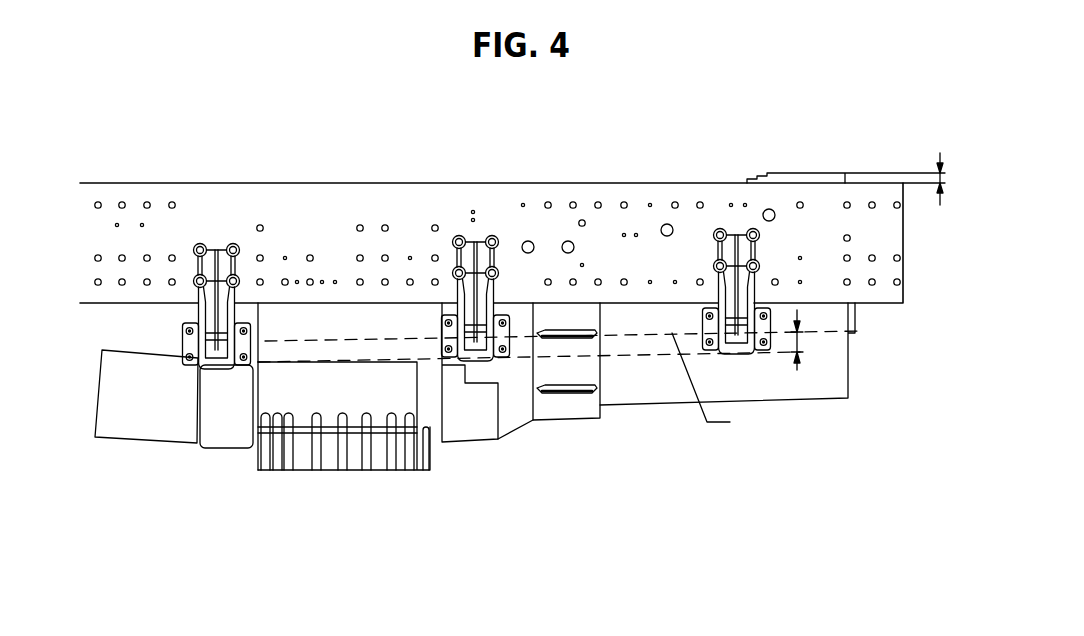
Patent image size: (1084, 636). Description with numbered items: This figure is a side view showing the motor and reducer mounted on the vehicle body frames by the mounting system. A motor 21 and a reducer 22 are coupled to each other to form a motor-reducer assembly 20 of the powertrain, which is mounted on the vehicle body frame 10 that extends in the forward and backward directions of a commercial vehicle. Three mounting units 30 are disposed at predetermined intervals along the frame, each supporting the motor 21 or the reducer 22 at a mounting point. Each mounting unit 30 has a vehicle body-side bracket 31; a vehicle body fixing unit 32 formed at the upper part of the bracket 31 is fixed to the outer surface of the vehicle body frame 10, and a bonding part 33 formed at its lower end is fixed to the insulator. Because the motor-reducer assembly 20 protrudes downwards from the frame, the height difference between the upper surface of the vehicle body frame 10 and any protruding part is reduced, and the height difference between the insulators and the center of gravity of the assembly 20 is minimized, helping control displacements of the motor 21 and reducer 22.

The vehicle body frame 10 is at (350, 183).
The motor-reducer assembly 20 is at (487, 516).
The motor 21 is at (622, 388).
The reducer 22 is at (405, 387).
The mounting unit 30 is at (226, 232).
The vehicle body-side bracket 31 is at (242, 248).
The vehicle body fixing unit 32 is at (196, 214).
The bonding part 33 is at (147, 342).